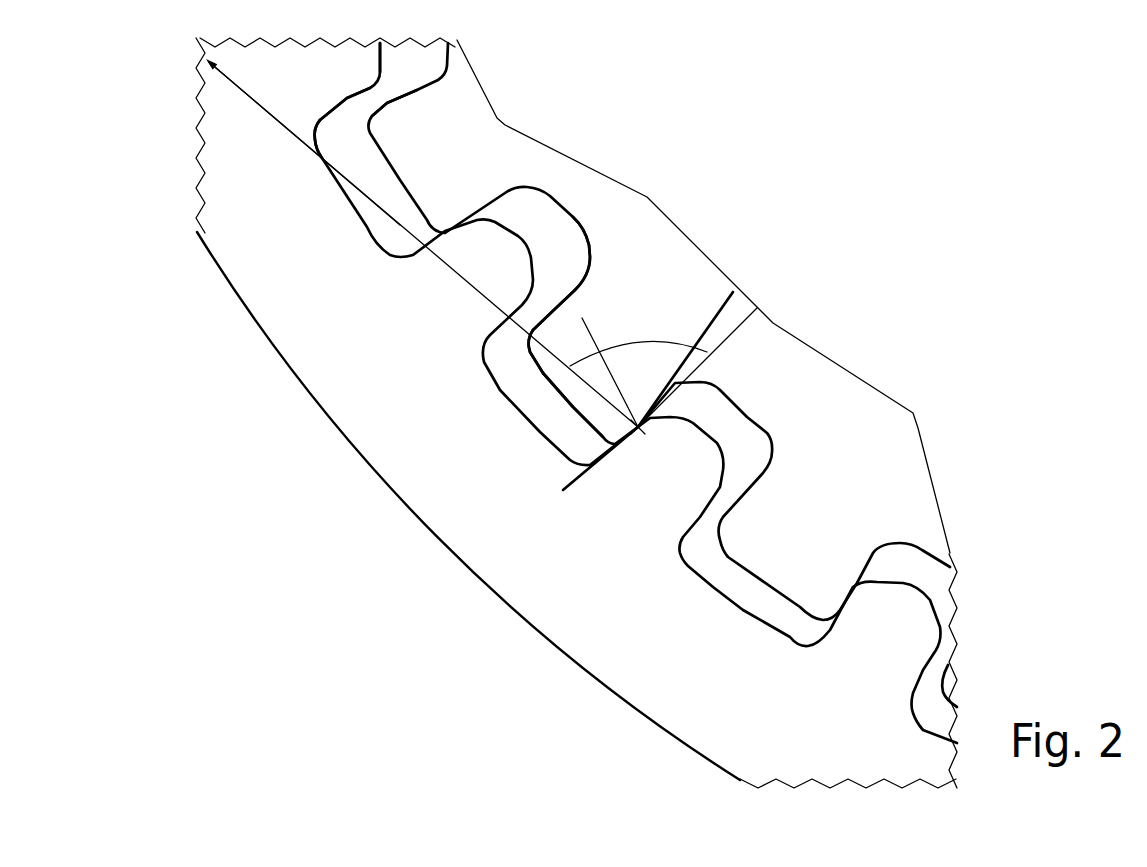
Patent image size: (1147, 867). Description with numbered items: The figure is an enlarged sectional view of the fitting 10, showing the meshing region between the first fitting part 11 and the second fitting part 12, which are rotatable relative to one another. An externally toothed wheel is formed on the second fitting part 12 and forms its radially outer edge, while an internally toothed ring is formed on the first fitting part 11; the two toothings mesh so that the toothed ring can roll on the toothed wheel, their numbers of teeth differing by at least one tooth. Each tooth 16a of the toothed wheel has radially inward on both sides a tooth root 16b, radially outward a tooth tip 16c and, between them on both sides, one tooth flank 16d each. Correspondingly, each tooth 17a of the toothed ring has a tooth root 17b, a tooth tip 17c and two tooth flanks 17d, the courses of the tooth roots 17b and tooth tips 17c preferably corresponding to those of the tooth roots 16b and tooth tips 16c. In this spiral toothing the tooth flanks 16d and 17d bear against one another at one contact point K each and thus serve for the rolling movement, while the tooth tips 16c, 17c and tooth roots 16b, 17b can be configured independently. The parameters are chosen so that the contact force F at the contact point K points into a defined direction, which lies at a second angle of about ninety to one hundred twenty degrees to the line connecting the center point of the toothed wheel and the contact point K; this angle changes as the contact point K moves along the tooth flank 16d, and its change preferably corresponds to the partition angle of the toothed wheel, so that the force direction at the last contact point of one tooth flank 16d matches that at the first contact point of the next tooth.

The fitting 10 is at (425, 641).
The first fitting part 11 is at (770, 719).
The second fitting part 12 is at (858, 438).
The tooth of the toothed wheel 16a is at (582, 318).
The tooth root 16b is at (590, 273).
The tooth tip 16c is at (528, 350).
The tooth flank 16d is at (553, 307).
The tooth of the toothed ring 17a is at (320, 80).
The tooth root 17b is at (322, 123).
The tooth tip 17c is at (380, 78).
The tooth flank 17d is at (350, 100).
The contact force F is at (237, 90).
The contact point K is at (638, 427).